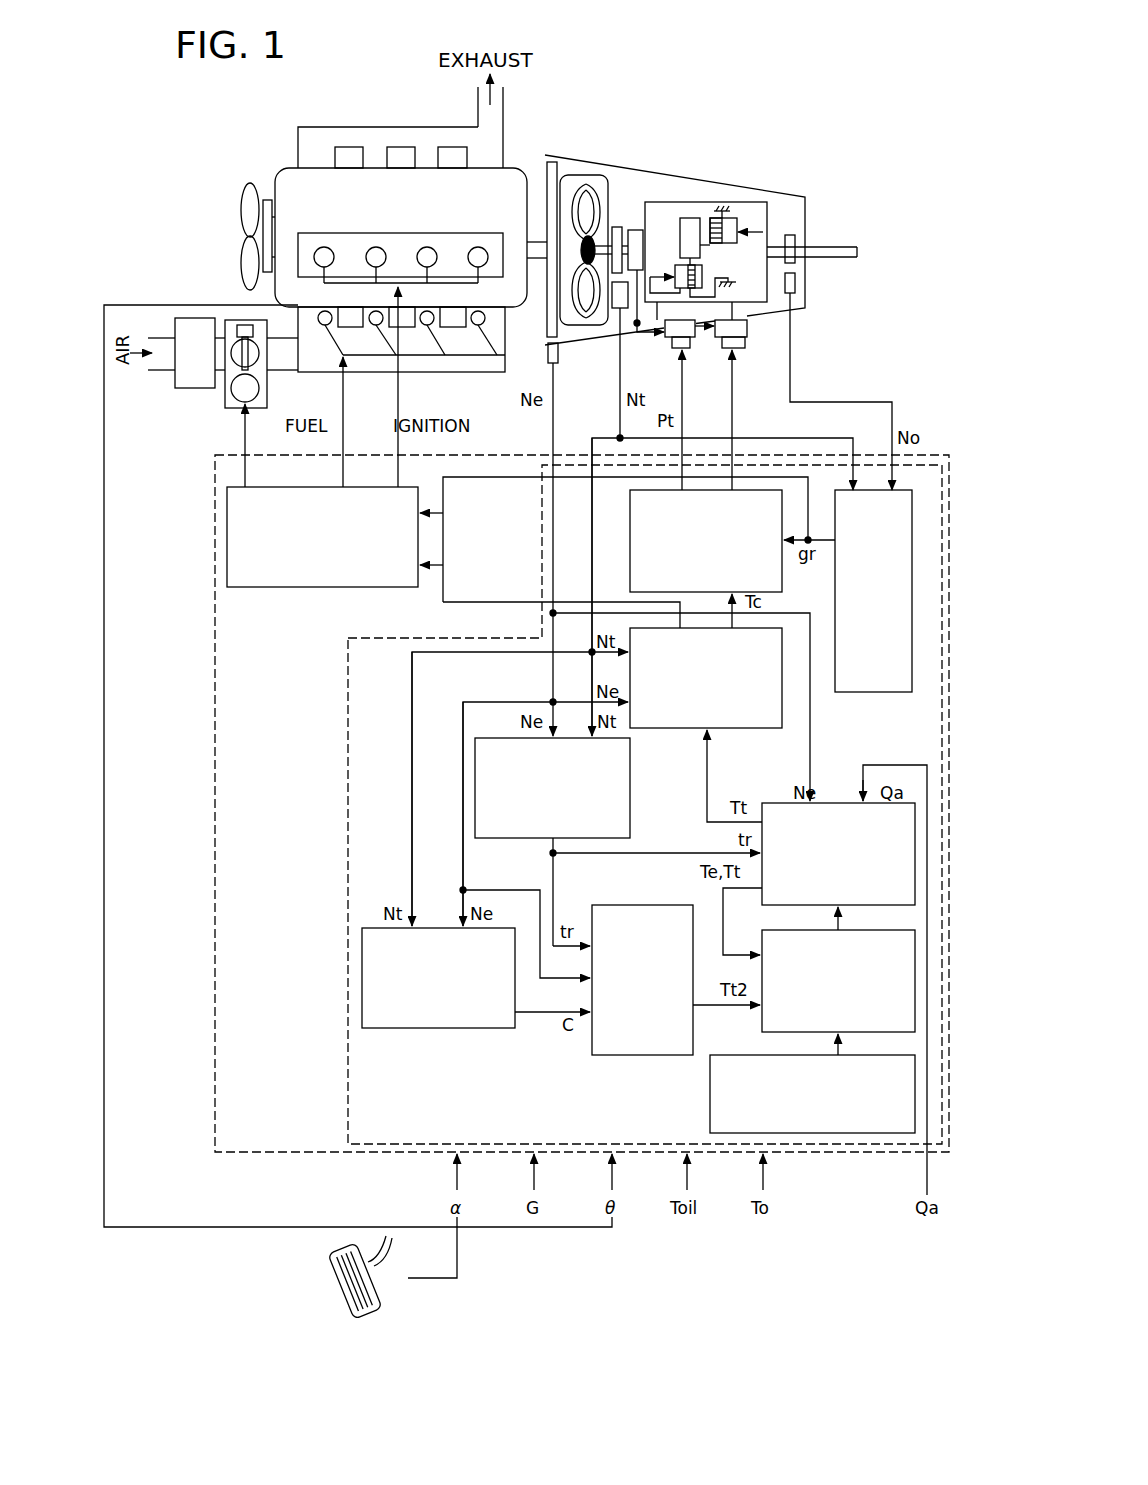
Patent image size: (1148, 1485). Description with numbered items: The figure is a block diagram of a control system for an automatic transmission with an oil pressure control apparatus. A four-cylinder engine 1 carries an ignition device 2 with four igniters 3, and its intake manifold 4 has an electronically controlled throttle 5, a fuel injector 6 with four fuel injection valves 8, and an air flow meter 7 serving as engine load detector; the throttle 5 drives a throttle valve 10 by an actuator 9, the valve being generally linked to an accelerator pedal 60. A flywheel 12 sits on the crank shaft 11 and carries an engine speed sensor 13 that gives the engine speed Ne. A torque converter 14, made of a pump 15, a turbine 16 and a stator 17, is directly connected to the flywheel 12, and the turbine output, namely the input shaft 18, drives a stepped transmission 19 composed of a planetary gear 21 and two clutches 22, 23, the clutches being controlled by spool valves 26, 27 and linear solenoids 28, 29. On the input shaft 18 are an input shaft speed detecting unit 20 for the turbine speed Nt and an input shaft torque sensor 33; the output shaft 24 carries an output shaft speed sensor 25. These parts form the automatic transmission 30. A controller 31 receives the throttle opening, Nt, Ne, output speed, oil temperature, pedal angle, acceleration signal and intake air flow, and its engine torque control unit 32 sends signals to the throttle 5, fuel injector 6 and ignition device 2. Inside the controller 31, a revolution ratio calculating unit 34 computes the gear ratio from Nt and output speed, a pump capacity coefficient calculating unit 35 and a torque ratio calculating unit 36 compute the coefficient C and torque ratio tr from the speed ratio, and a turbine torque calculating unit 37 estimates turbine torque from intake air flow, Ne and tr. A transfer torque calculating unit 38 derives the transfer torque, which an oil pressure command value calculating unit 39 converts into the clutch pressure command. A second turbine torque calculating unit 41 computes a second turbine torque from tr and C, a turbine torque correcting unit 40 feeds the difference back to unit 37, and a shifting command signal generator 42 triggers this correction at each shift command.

The engine 1 is at (283, 178).
The ignition device 2 is at (392, 233).
The igniter 3 is at (325, 255).
The intake manifold 4 is at (380, 372).
The electronically controlled throttle 5 is at (225, 395).
The fuel injector 6 is at (428, 358).
The air flow meter 7 is at (185, 390).
The fuel injection valve 8 is at (487, 322).
The actuator 9 is at (262, 388).
The throttle valve 10 is at (258, 353).
The crank shaft 11 is at (537, 250).
The flywheel 12 is at (552, 162).
The engine speed sensor 13 is at (555, 363).
The torque converter 14 is at (596, 190).
The pump 15 is at (605, 208).
The turbine 16 is at (604, 217).
The stator 17 is at (625, 220).
The input shaft 18 is at (640, 242).
The stepped transmission 19 is at (727, 205).
The input shaft speed detecting unit 20 is at (618, 308).
The planetary gear 21 is at (690, 218).
The clutch 22 is at (725, 215).
The clutch 23 is at (716, 270).
The output shaft 24 is at (833, 247).
The output shaft speed sensor 25 is at (797, 285).
The spool valve 26 is at (672, 332).
The spool valve 27 is at (690, 350).
The linear solenoid 28 is at (687, 350).
The linear solenoid 29 is at (740, 350).
The automatic transmission 30 is at (660, 160).
The controller 31 is at (215, 1025).
The engine torque control unit 32 is at (290, 590).
The input shaft torque sensor 33 is at (545, 240).
The revolution ratio calculating unit 34 is at (868, 694).
The pump capacity coefficient calculating unit 35 is at (435, 1030).
The torque ratio calculating unit 36 is at (632, 790).
The turbine torque calculating unit 37 is at (838, 802).
The transfer torque calculating unit 38 is at (735, 730).
The oil pressure command value calculating unit 39 is at (783, 568).
The turbine torque correcting unit 40 is at (762, 1022).
The second turbine torque calculating unit 41 is at (637, 905).
The shifting command signal generator 42 is at (710, 1096).
The accelerator pedal 60 is at (330, 1278).